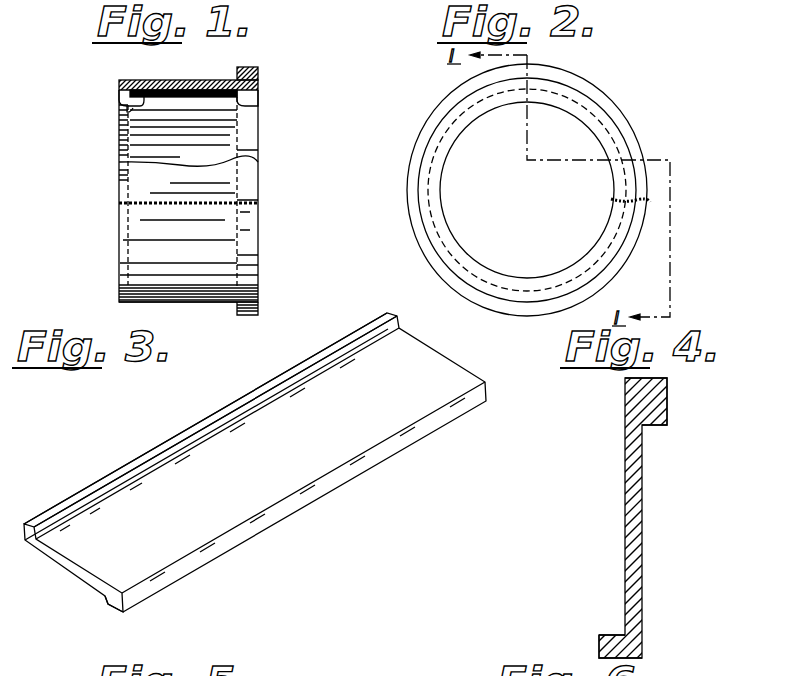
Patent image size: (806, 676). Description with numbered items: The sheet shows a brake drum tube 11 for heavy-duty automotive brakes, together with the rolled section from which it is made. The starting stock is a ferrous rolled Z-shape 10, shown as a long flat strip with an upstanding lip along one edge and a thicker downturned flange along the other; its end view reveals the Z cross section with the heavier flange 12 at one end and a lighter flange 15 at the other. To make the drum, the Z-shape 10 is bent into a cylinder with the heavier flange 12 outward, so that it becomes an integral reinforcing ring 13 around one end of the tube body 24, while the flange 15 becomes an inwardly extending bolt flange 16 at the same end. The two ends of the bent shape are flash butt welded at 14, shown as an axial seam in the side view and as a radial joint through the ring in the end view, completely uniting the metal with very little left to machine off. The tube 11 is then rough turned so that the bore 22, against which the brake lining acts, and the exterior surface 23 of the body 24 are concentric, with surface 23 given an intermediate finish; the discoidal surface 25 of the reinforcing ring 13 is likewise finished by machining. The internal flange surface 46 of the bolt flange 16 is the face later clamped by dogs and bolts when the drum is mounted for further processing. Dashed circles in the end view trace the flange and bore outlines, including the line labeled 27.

In FIG. 3, the Z-shape 10 is at (142, 537).
In FIG. 4, the Z-shape 10 is at (642, 495).
In FIG. 1, the brake drum tube 11 is at (259, 170).
In FIG. 2, the brake drum tube 11 is at (496, 232).
In FIG. 3, the heavier flange 12 is at (110, 602).
In FIG. 4, the heavier flange 12 is at (657, 393).
In FIG. 1, the reinforcing ring 13 is at (247, 66).
In FIG. 2, the reinforcing ring 13 is at (601, 87).
In FIG. 1, the flash butt weld 14 is at (150, 198).
In FIG. 2, the flash butt weld 14 is at (650, 202).
In FIG. 3, the flange 15 is at (85, 493).
In FIG. 4, the flange 15 is at (601, 640).
In FIG. 1, the bolt flange 16 is at (128, 102).
In FIG. 2, the bolt flange 16 is at (603, 133).
In FIG. 1, the bore 22 is at (246, 106).
In FIG. 2, the bore 22 is at (476, 103).
In FIG. 1, the exterior surface 23 is at (208, 63).
In FIG. 2, the exterior surface 23 is at (608, 110).
In FIG. 1, the body 24 is at (157, 80).
In FIG. 1, the discoidal surface 25 is at (238, 312).
In FIG. 2, the discoidal surface 25 is at (412, 178).
In FIG. 1, the inner band 27 is at (120, 290).
In FIG. 2, the inner band 27 is at (437, 157).
In FIG. 1, the internal flange surface 46 is at (132, 108).
In FIG. 2, the internal flange surface 46 is at (540, 277).